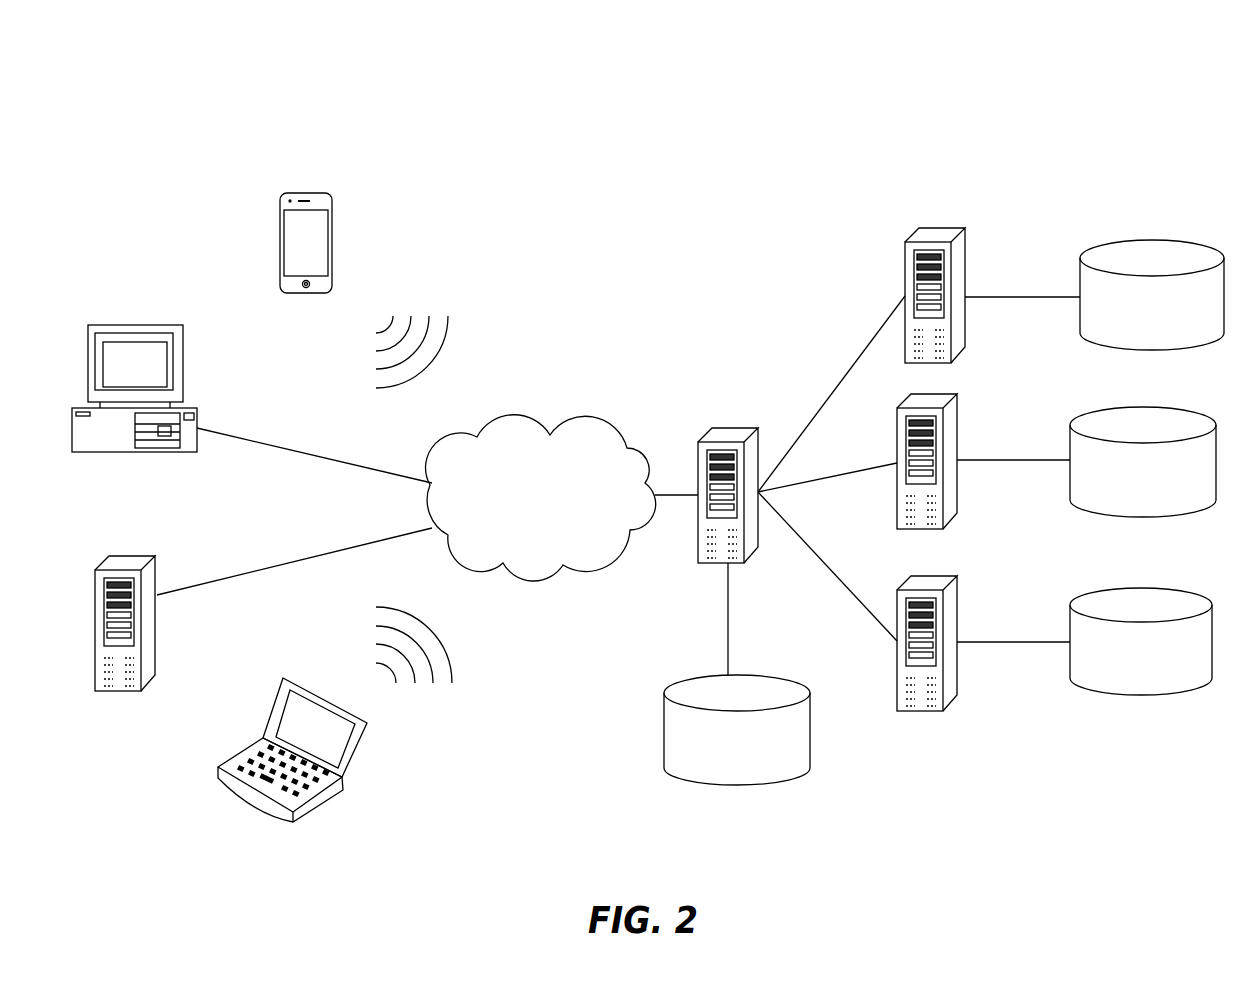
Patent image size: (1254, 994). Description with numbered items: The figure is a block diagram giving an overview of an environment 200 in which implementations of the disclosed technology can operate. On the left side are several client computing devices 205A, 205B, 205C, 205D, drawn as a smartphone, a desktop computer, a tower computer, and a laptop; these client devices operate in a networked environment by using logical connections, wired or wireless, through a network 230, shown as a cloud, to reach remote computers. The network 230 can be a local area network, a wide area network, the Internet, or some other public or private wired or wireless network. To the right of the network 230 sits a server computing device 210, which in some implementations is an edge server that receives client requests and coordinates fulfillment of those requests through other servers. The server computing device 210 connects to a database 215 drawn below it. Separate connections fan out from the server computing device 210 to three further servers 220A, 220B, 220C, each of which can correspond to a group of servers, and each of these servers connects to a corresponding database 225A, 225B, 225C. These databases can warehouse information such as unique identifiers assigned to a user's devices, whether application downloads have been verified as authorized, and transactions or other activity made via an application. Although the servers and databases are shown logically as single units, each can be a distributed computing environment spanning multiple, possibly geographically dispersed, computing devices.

The environment 200 is at (1024, 108).
The client computing device 205A is at (320, 193).
The client computing device 205B is at (175, 325).
The client computing device 205C is at (155, 559).
The client computing device 205D is at (362, 752).
The server computing device 210 is at (740, 424).
The database 215 is at (785, 678).
The server 220A is at (966, 228).
The server 220B is at (958, 396).
The server 220C is at (958, 578).
The database 225A is at (1150, 240).
The database 225B is at (1138, 407).
The database 225C is at (1138, 588).
The network 230 is at (595, 418).